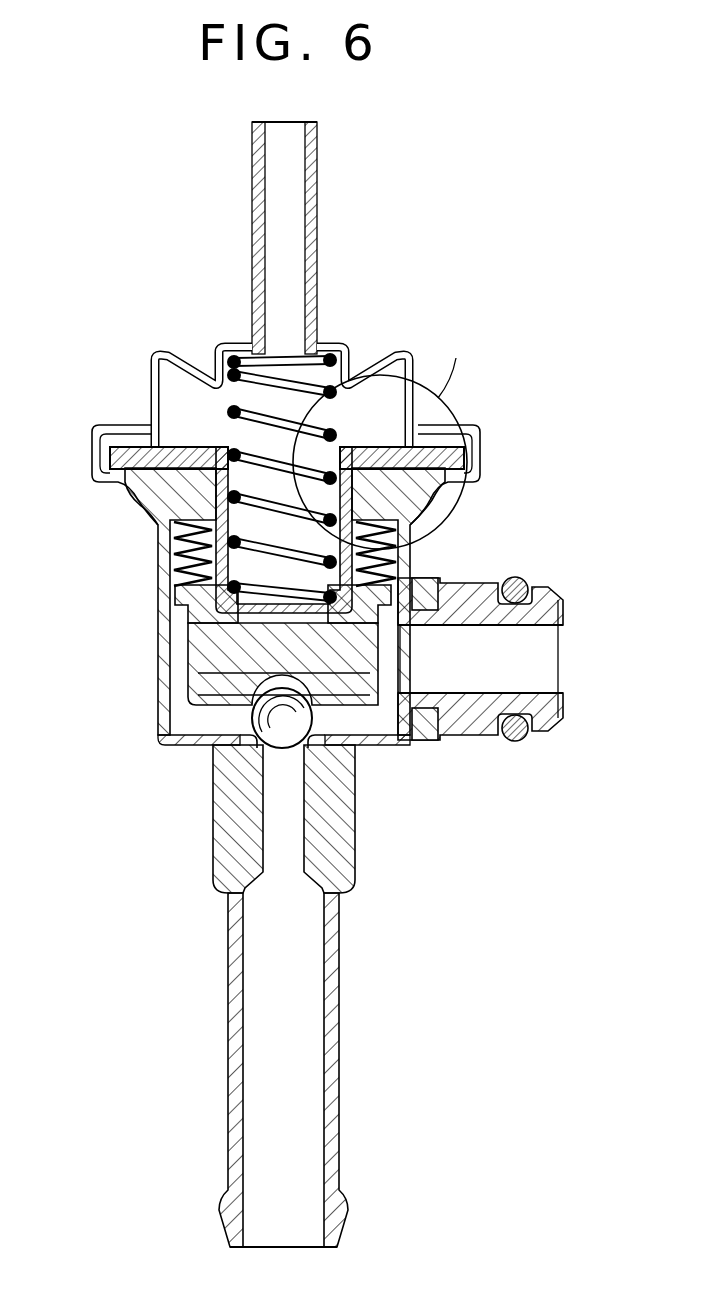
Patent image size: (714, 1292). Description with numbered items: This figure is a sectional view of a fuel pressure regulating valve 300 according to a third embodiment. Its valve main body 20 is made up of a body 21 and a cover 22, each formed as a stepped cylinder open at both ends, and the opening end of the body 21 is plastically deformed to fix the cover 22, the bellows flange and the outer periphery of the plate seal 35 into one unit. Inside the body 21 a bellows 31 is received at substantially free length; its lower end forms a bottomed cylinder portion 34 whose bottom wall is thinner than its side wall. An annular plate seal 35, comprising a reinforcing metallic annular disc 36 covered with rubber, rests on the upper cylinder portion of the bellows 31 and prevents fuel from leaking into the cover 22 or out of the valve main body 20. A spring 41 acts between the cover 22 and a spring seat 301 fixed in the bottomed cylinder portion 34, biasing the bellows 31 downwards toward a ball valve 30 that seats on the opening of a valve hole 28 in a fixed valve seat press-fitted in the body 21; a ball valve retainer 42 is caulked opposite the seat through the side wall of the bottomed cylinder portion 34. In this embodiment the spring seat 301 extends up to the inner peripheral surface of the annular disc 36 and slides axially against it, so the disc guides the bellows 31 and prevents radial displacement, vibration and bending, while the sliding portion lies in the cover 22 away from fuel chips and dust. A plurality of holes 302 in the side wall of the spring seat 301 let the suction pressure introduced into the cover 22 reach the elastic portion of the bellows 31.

The valve assembly 300 is at (392, 278).
The spring 41 is at (233, 352).
The cover 22 is at (152, 351).
The body 21 is at (108, 458).
The plate seal 35 is at (470, 462).
The valve main body 20 is at (150, 530).
The spring seat 301 is at (400, 528).
The holes 302 is at (176, 556).
The annular disc 36 is at (440, 413).
The bellows 31 is at (186, 612).
The bottomed cylinder portion 34 is at (190, 660).
The ball valve retainer 42 is at (190, 727).
The ball valve 30 is at (262, 750).
The valve hole 28 is at (236, 858).